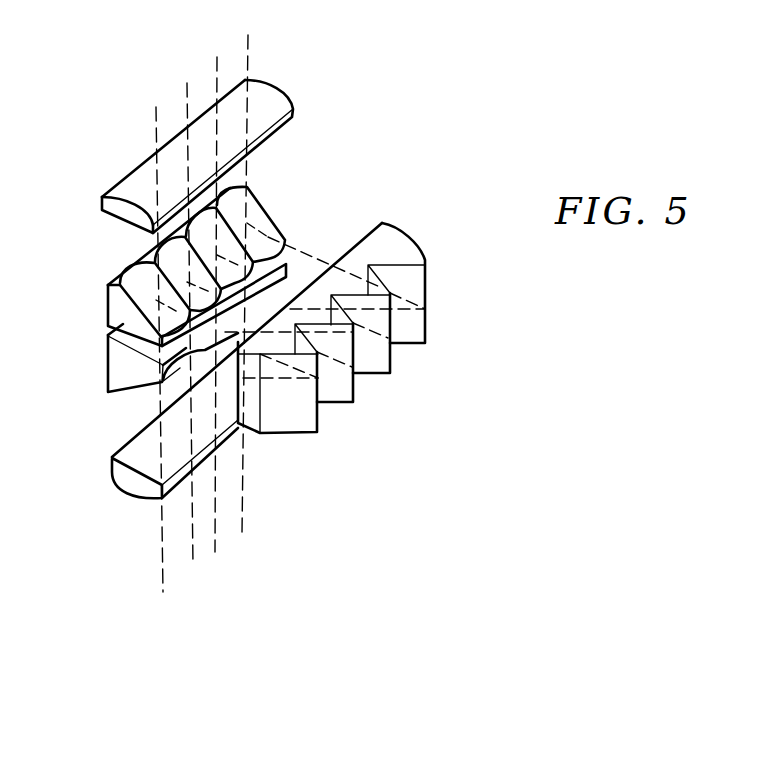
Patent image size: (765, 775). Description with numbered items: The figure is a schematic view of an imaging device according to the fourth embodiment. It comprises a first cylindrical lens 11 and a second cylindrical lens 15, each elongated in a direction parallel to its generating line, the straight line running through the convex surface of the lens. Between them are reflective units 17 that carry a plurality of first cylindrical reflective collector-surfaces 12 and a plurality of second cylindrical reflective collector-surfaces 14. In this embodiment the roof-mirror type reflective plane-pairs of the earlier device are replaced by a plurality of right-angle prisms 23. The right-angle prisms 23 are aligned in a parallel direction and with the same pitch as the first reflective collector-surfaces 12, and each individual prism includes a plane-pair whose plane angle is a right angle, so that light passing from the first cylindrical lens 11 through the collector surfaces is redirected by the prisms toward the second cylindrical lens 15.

The first cylindrical lens 11 is at (283, 82).
The first cylindrical reflective collector-surfaces 12 is at (269, 213).
The reflective units 17 is at (107, 303).
The second cylindrical reflective collector-surfaces 14 is at (150, 382).
The second cylindrical lens 15 is at (113, 486).
The right-angle prisms 23 is at (397, 364).